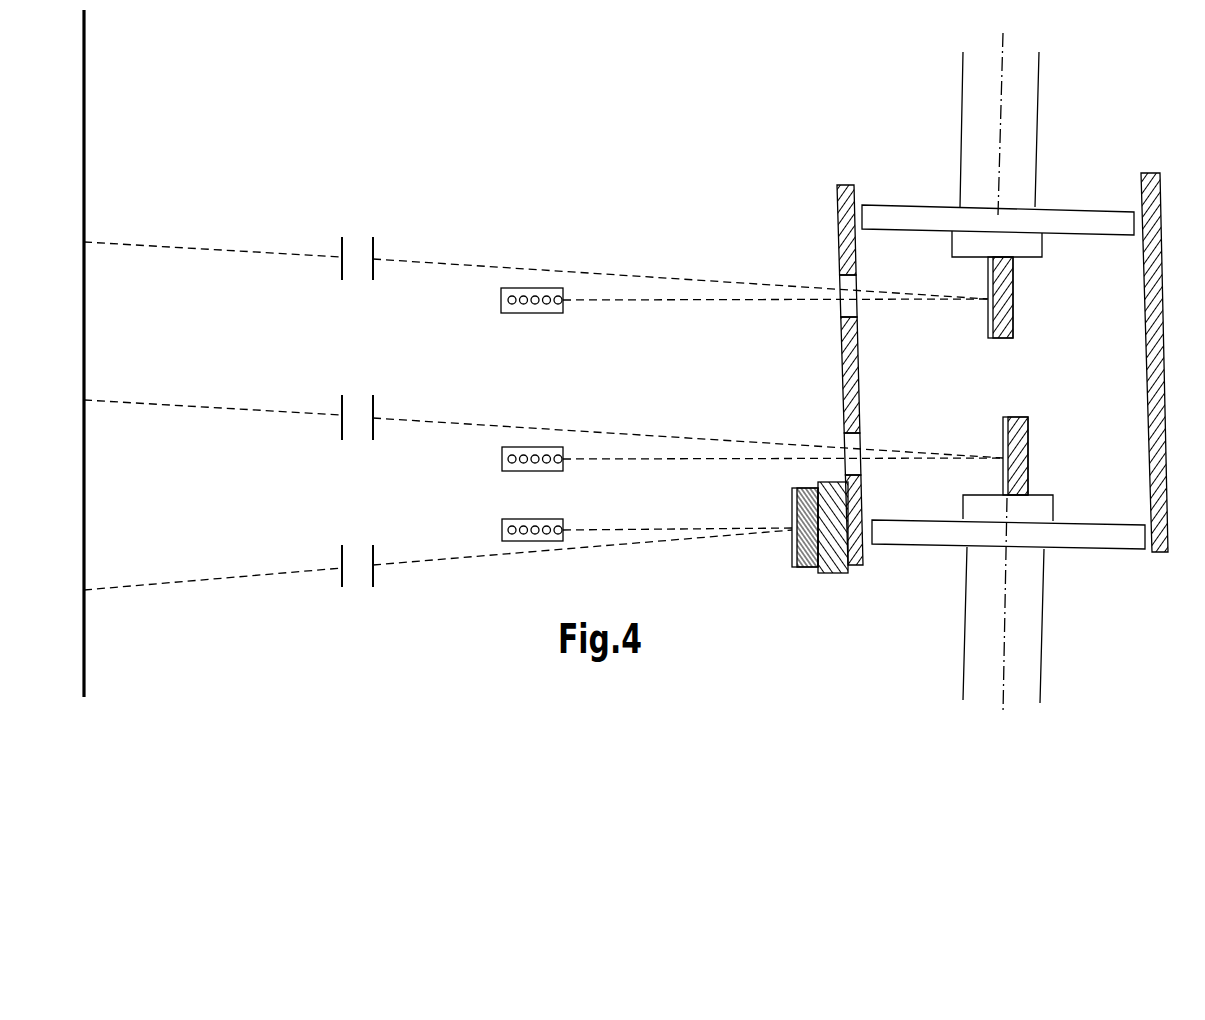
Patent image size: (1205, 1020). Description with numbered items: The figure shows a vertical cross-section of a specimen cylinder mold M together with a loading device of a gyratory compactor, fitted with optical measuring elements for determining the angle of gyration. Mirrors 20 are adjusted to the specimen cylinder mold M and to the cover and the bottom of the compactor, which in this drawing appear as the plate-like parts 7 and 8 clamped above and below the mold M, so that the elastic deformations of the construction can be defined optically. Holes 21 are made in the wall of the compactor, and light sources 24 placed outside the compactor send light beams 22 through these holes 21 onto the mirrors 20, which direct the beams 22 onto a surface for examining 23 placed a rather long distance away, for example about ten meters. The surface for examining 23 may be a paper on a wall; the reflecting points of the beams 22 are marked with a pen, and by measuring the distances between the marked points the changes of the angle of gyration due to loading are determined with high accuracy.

The upper arm 7 is at (1078, 210).
The lower arm 8 is at (1098, 545).
The mirror 20 is at (988, 318).
The hole 21 is at (845, 312).
The light beam 22 is at (626, 272).
The surface for examining 23 is at (86, 350).
The light source 24 is at (503, 288).
The specimen cylinder mold M is at (1156, 368).